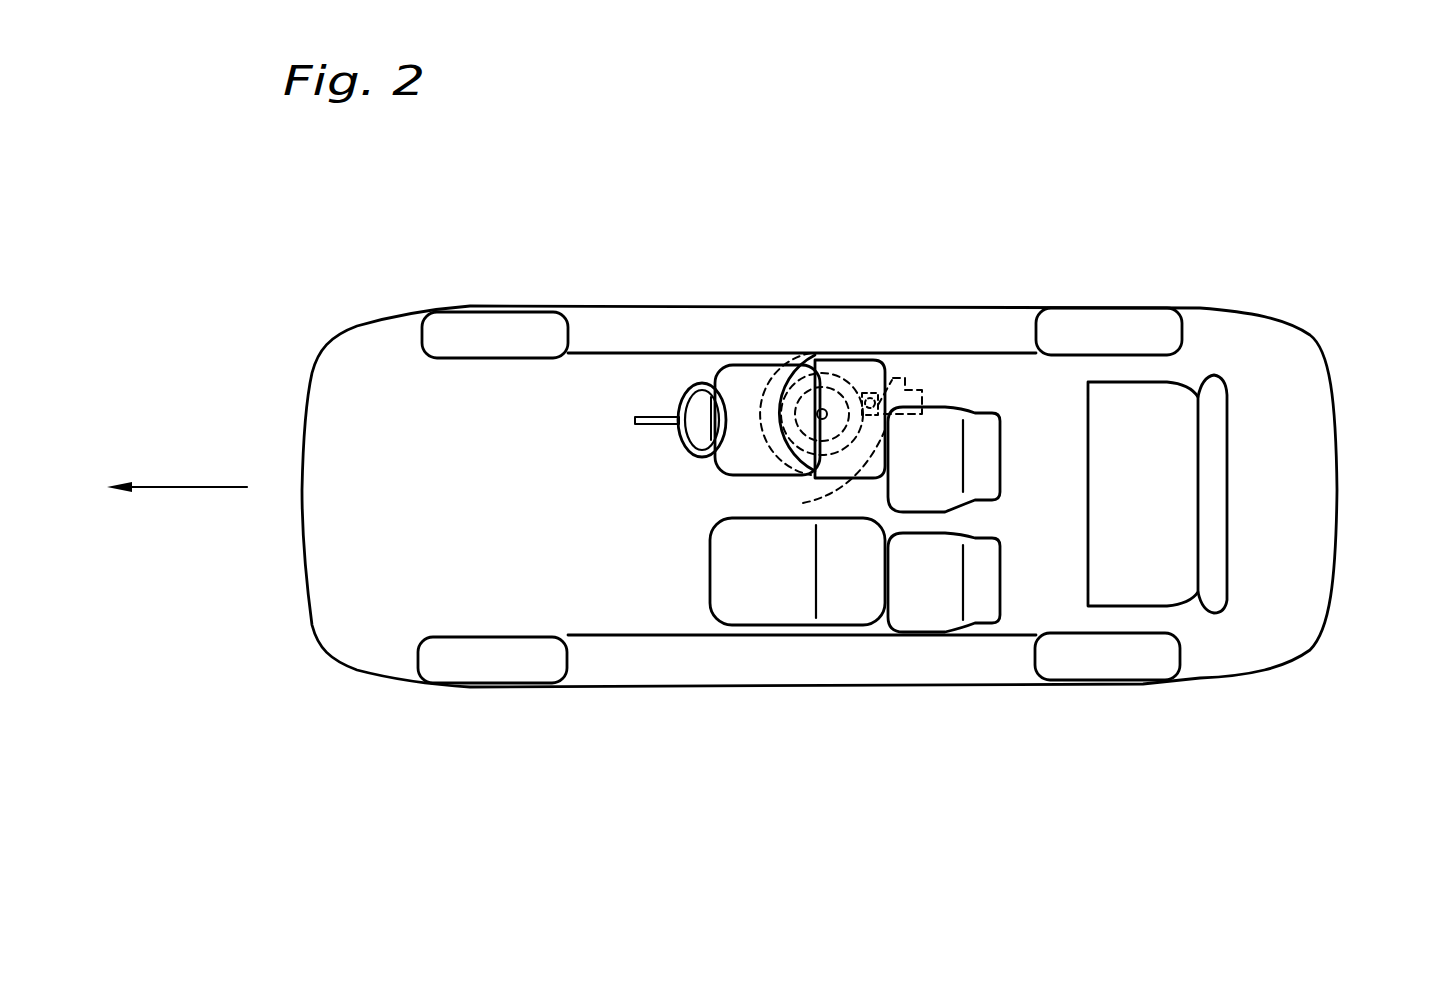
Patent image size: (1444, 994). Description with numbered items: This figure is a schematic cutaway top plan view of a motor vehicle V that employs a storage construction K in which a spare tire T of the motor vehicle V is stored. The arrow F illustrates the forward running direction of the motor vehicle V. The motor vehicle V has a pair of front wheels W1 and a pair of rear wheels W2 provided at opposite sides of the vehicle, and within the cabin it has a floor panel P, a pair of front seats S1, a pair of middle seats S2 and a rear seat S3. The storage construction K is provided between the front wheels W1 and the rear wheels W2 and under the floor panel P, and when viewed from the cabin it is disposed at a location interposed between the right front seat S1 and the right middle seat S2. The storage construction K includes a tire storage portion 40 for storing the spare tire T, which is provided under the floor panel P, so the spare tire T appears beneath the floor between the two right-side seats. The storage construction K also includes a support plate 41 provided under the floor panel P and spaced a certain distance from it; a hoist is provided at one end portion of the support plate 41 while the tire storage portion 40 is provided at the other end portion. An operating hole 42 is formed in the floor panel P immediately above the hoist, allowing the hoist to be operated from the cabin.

The motor vehicle V is at (1356, 487).
The arrow F is at (177, 465).
The floor panel P is at (1003, 378).
The front wheels W1 is at (500, 328).
The rear wheels W2 is at (1117, 325).
The front seats S1 is at (750, 372).
The middle seats S2 is at (945, 423).
The rear seat S3 is at (1215, 388).
The storage construction K is at (845, 256).
The tire storage portion 40 is at (858, 346).
The support plate 41 is at (903, 376).
The operating hole 42 is at (813, 471).
The spare tire T is at (809, 354).